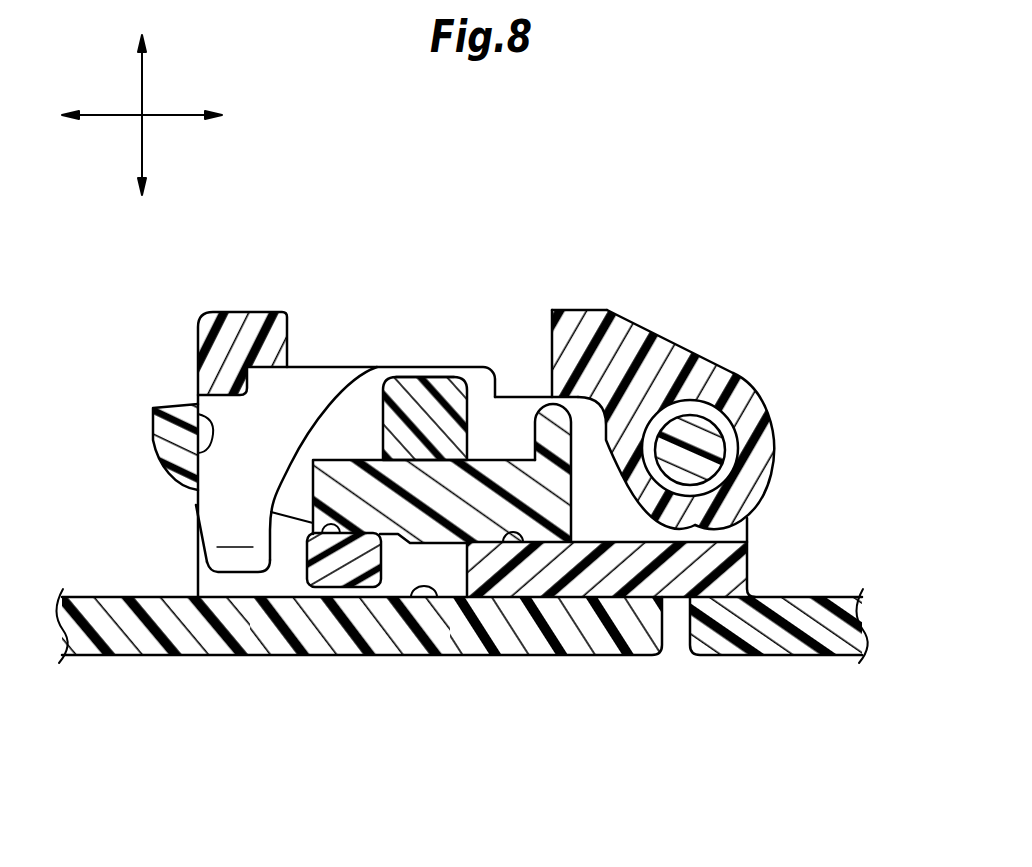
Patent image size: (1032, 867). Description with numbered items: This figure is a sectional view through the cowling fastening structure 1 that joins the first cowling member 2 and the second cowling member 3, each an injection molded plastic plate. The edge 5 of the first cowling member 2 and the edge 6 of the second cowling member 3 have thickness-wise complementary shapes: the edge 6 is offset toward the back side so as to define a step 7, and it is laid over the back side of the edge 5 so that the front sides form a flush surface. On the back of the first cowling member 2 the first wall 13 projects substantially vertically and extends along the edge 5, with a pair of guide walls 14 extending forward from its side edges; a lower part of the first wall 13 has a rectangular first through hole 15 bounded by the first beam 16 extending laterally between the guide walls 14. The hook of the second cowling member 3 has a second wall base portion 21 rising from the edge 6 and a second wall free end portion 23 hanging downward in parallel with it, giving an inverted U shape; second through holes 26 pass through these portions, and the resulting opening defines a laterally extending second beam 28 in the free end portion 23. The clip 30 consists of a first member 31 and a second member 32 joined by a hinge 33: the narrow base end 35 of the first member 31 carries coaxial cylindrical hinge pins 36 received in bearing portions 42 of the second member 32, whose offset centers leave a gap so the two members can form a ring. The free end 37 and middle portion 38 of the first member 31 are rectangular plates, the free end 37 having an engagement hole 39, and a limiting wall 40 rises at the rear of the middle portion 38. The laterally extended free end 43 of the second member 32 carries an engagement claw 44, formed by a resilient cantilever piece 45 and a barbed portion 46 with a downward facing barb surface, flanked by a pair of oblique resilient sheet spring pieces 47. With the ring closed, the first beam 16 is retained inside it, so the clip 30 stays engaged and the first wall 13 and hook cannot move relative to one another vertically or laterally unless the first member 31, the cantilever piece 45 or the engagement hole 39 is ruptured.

The cowling fastening structure 1 is at (568, 205).
The first cowling member 2 is at (97, 668).
The second cowling member 3 is at (809, 668).
The edge 5 is at (566, 632).
The edge 6 is at (600, 573).
The step 7 is at (745, 572).
The first wall 13 is at (410, 395).
The guide walls 14 is at (207, 585).
The first through hole 15 is at (424, 590).
The first beam 16 is at (438, 405).
The second wall base portion 21 is at (502, 435).
The second wall free end portion 23 is at (352, 568).
The second through holes 26 is at (330, 535).
The second beam 28 is at (393, 570).
The clip 30 is at (730, 352).
The first member 31 is at (145, 398).
The second member 32 is at (612, 302).
The hinge 33 is at (772, 392).
The base end 35 is at (737, 527).
The hinge pins 36 is at (705, 440).
The free end 37 is at (157, 444).
The middle portion 38 is at (357, 483).
The engagement hole 39 is at (202, 414).
The limiting wall 40 is at (537, 412).
The bearing portions 42 is at (762, 467).
The free end 43 is at (248, 328).
The engagement claw 44 is at (192, 563).
The cantilever piece 45 is at (273, 413).
The barbed portion 46 is at (200, 525).
The sheet spring pieces 47 is at (292, 552).